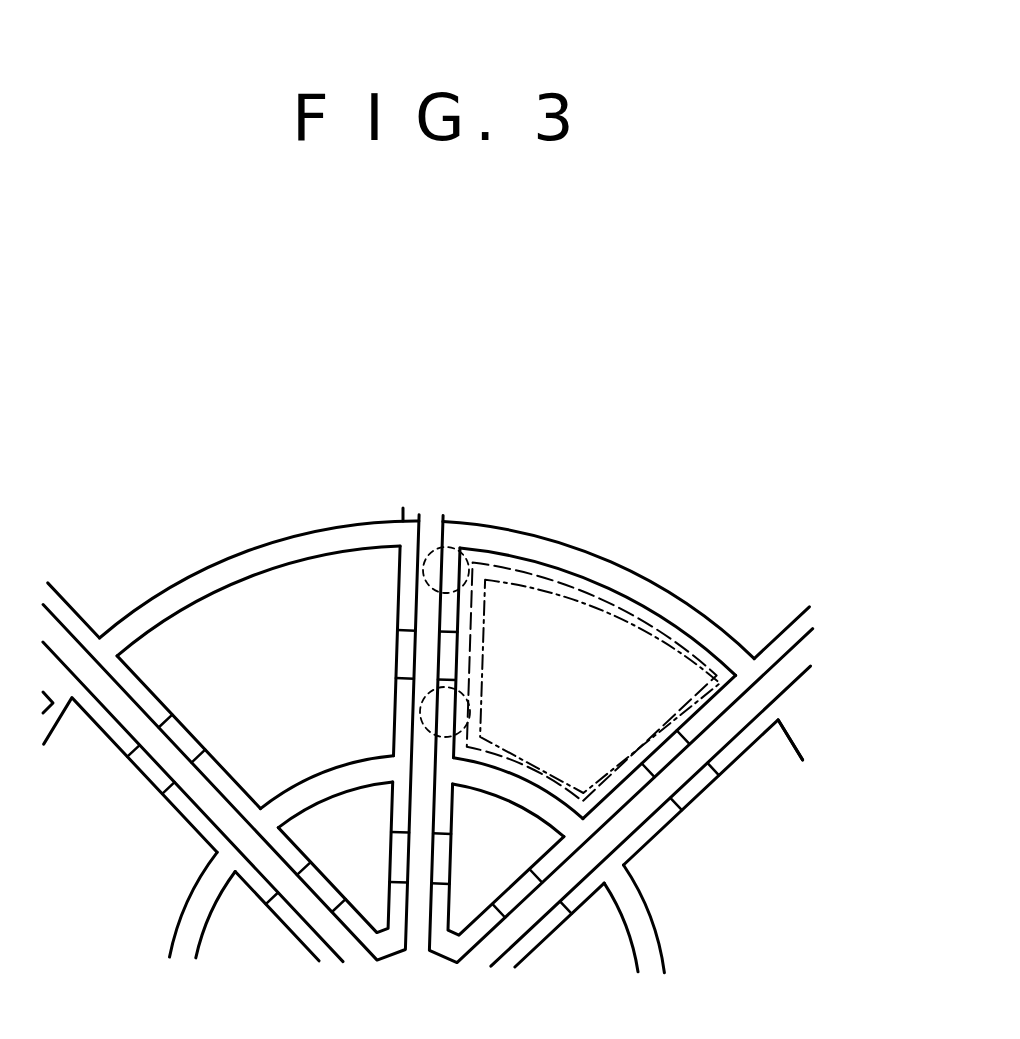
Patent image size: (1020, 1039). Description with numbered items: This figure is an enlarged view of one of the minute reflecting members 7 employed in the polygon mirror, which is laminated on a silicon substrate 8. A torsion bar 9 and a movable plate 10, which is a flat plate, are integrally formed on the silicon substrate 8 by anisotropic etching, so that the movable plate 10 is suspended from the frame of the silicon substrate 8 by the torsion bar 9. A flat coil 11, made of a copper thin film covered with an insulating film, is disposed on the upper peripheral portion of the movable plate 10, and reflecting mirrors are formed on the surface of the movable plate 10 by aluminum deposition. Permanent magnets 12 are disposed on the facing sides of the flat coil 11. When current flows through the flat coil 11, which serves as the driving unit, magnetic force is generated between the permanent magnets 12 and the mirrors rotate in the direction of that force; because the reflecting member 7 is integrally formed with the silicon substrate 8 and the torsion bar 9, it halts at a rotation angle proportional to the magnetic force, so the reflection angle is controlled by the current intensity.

The minute reflecting member 7 is at (560, 416).
The silicon substrate 8 is at (460, 509).
The torsion bar 9 is at (806, 719).
The movable plate 10 is at (548, 672).
The flat coil 11 is at (503, 830).
The permanent magnet 12 is at (430, 703).